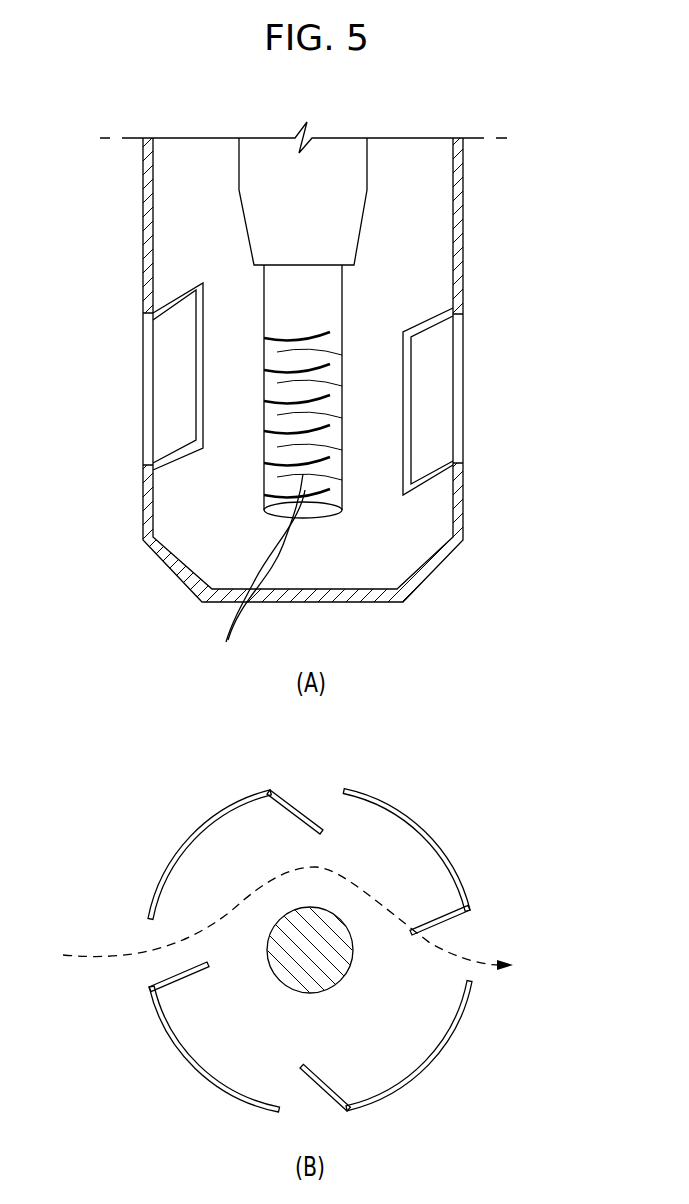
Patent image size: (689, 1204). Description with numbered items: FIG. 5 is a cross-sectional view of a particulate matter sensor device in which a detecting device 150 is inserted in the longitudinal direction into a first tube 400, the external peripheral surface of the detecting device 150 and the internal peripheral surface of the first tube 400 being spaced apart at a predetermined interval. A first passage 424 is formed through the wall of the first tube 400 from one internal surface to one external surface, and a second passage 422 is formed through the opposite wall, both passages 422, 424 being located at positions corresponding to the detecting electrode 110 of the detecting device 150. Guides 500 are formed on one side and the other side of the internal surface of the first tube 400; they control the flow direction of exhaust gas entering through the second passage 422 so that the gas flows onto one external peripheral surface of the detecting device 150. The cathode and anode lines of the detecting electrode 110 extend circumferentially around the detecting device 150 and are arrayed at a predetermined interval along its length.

The detecting electrode 110 is at (256, 576).
The detecting device 150 is at (358, 420).
The first tube 400 is at (143, 505).
The second passage 422 is at (148, 410).
The first passage 424 is at (458, 357).
The guide 500 is at (172, 357).